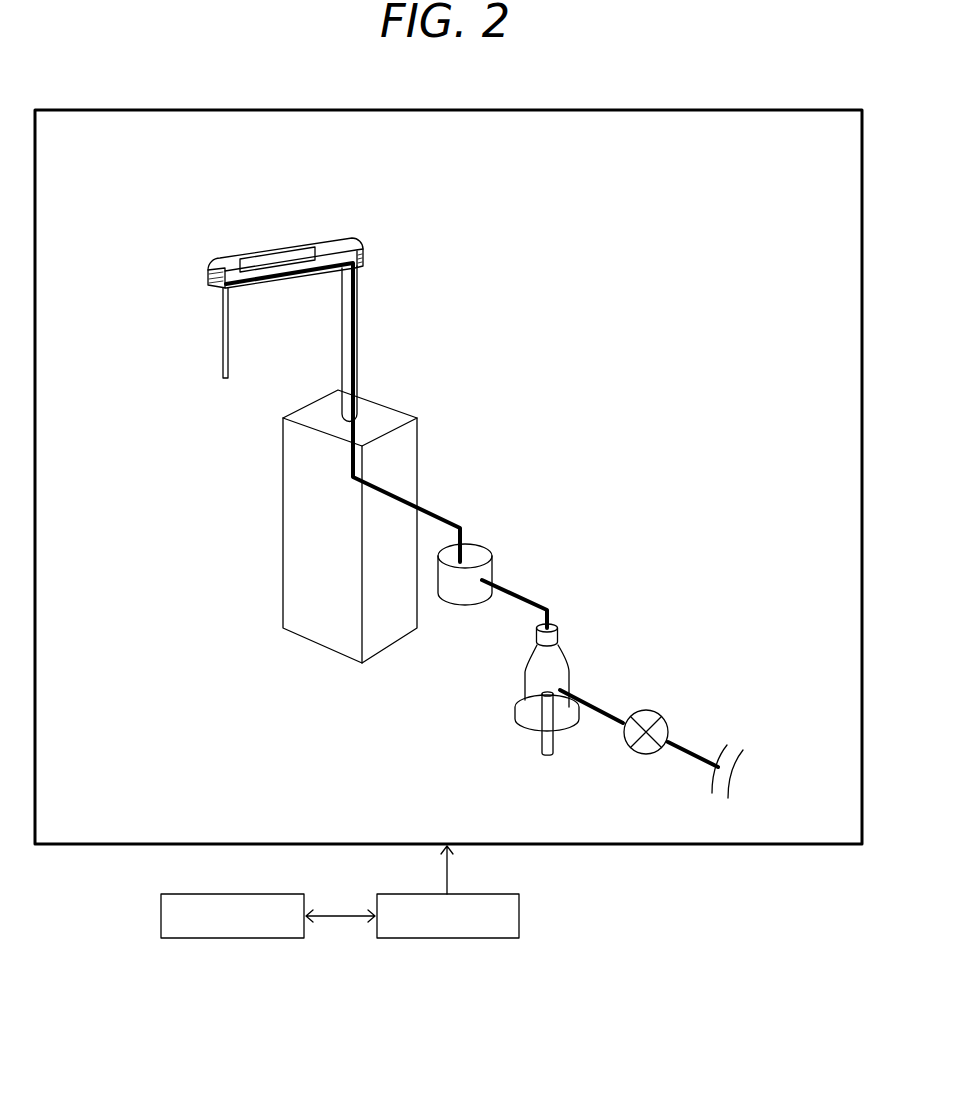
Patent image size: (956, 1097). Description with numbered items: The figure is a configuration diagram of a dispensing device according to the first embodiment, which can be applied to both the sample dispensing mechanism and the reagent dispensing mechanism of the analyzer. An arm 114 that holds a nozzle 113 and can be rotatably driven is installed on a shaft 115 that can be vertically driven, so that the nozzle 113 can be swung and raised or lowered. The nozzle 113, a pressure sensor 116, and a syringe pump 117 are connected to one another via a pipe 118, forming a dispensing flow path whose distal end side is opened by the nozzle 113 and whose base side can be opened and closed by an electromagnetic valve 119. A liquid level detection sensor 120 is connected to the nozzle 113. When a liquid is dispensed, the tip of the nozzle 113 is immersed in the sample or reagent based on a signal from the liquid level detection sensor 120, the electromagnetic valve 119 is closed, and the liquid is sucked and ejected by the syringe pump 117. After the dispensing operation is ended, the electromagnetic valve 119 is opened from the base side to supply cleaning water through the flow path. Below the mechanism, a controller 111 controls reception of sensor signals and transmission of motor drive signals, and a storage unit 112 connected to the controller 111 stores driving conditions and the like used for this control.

The controller 111 is at (522, 920).
The storage unit 112 is at (157, 920).
The nozzle 113 is at (222, 333).
The arm 114 is at (323, 240).
The shaft 115 is at (362, 332).
The pressure sensor 116 is at (490, 558).
The syringe pump 117 is at (570, 668).
The pipe 118 is at (357, 283).
The electromagnetic valve 119 is at (665, 713).
The liquid level detection sensor 120 is at (268, 253).